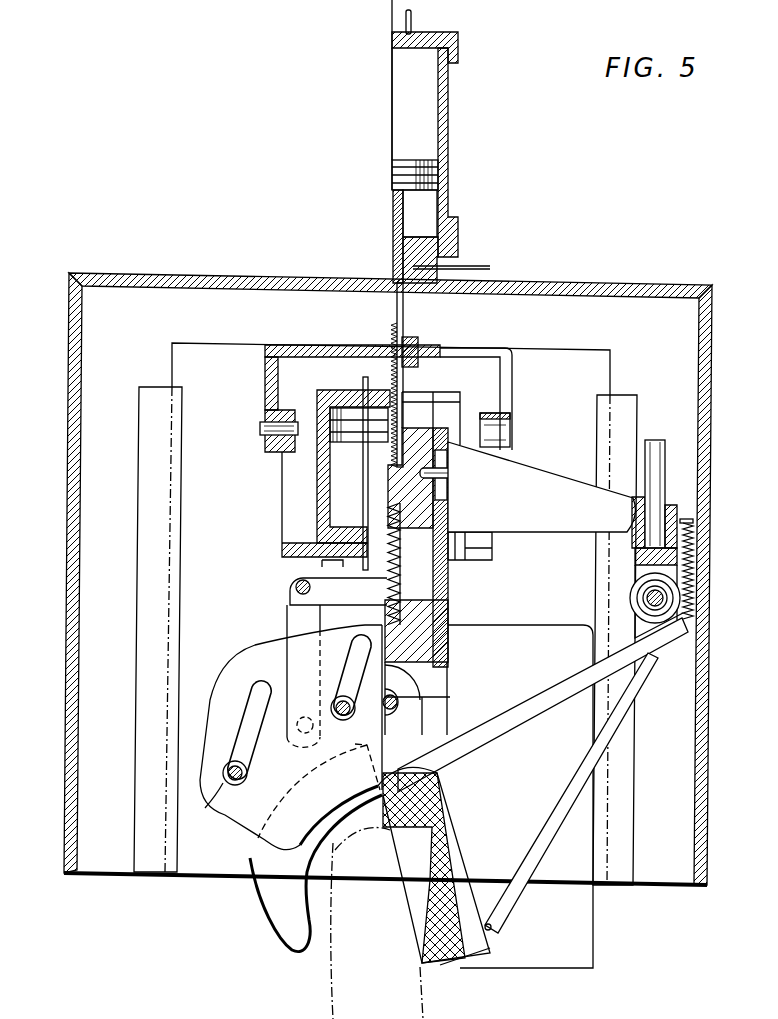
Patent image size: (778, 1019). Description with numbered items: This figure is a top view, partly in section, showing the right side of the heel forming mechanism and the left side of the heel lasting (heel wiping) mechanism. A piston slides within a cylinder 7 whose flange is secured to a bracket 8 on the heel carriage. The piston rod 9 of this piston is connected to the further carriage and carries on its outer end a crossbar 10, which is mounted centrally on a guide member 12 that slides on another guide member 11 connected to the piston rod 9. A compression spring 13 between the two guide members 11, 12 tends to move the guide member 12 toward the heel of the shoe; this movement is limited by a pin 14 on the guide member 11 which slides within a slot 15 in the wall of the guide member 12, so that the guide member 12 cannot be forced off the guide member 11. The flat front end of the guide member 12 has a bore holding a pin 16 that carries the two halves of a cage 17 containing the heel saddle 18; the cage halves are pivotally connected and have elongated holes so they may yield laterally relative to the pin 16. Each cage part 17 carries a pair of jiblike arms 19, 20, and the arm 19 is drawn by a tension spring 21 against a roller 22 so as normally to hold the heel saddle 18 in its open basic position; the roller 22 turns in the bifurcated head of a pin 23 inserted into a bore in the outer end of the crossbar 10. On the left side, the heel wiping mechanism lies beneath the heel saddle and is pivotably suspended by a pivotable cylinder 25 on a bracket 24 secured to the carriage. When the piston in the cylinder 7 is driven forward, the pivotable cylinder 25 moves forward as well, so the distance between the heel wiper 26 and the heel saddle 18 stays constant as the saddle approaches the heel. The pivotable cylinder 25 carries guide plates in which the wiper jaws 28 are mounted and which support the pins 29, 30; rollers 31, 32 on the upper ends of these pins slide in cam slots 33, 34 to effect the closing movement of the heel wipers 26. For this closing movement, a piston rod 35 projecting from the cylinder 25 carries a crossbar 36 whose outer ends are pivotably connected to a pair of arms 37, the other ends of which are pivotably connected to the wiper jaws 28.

The cylinder 7 is at (448, 107).
The bracket 8 is at (605, 287).
The piston rod 9 is at (405, 307).
The crossbar 10 is at (548, 477).
The guide member 11 is at (428, 430).
The guide member 12 is at (435, 607).
The compression spring 13 is at (397, 570).
The pin 14 is at (452, 475).
The slot 15 is at (442, 462).
The pin 16 is at (450, 697).
The cage 17 is at (443, 803).
The heel saddle 18 is at (427, 835).
The jiblike arm 19 is at (557, 690).
The jiblike arm 20 is at (583, 772).
The tension spring 21 is at (693, 593).
The roller 22 is at (667, 585).
The pin 23 is at (660, 462).
The bracket 24 is at (265, 392).
The pivotable cylinder 25 is at (335, 478).
The heel wiper 26 is at (287, 937).
The wiper jaw 28 is at (242, 815).
The pin 29 is at (233, 763).
The pin 30 is at (337, 713).
The roller 31 is at (227, 792).
The roller 32 is at (343, 713).
The cam slot 33 is at (247, 707).
The cam slot 34 is at (347, 663).
The piston rod 35 is at (375, 498).
The crossbar 36 is at (287, 583).
The arm 37 is at (297, 623).